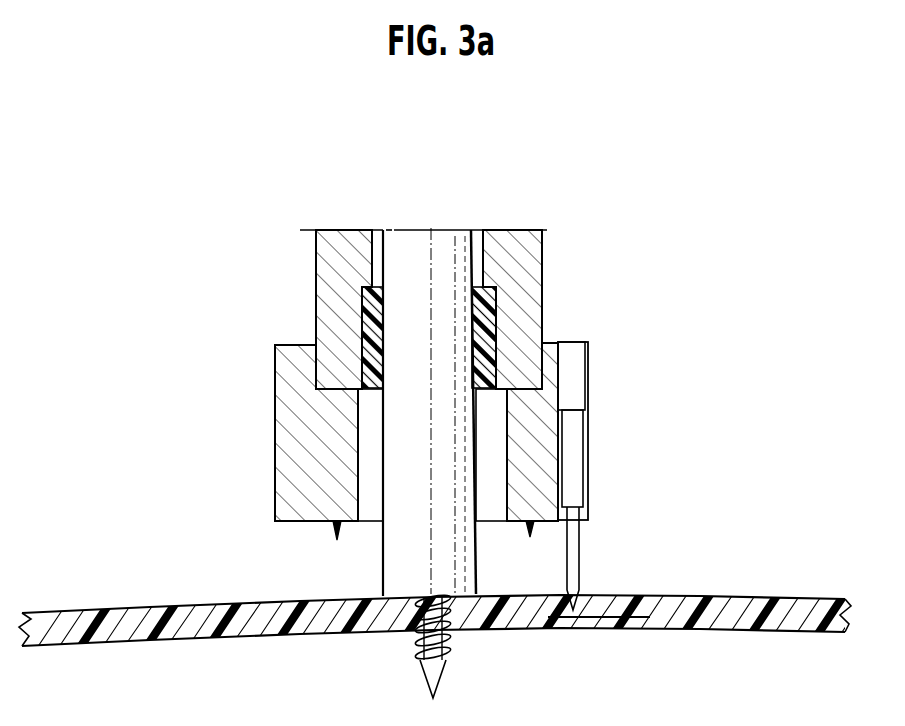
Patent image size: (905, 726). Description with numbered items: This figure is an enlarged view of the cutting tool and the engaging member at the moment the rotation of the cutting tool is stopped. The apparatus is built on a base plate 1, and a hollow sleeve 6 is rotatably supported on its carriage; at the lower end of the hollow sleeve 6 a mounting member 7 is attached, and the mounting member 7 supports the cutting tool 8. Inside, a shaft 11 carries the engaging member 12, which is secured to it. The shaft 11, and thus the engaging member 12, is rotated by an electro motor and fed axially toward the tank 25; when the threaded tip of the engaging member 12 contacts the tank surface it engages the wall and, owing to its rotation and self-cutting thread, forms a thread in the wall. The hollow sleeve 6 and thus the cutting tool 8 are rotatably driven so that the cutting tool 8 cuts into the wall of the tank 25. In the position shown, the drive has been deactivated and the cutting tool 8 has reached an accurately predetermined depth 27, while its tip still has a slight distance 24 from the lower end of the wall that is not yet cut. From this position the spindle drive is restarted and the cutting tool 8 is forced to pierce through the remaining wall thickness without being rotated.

The base plate 1 is at (299, 622).
The hollow sleeve 6 is at (333, 283).
The mounting member 7 is at (296, 440).
The cutting tool 8 is at (577, 548).
The shaft 11 is at (452, 258).
The engaging member 12 is at (451, 660).
The slight distance 24 is at (641, 620).
The tank 25 is at (782, 612).
The predetermined depth 27 is at (645, 606).